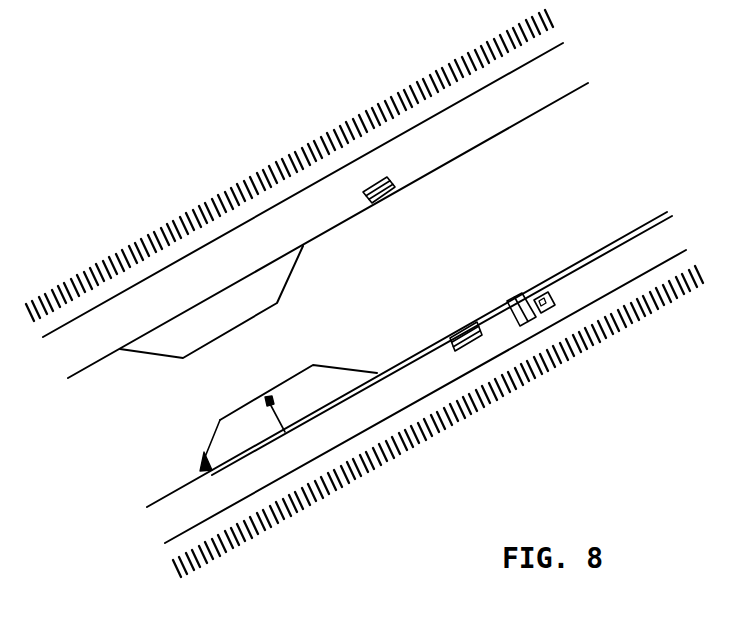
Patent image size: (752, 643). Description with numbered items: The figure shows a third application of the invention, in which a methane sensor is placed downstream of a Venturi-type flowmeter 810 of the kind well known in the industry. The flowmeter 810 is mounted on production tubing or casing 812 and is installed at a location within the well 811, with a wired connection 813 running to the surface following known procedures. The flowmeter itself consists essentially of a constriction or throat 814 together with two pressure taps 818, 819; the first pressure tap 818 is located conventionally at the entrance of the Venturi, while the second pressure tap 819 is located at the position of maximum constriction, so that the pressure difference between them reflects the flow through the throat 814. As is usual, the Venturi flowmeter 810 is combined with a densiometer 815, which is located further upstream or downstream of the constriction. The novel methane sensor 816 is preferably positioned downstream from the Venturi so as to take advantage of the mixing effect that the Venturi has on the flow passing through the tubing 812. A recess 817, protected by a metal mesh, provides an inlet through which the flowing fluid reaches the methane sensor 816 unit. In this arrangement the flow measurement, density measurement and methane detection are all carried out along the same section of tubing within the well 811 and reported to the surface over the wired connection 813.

The Venturi-type flowmeter 810 is at (141, 417).
The well 811 is at (585, 315).
The production tubing or casing 812 is at (523, 120).
The wired connection 813 is at (613, 250).
The constriction or throat 814 is at (255, 316).
The densiometer 815 is at (450, 328).
The methane sensor 816 is at (515, 325).
The recess 817 is at (510, 300).
The pressure tap 818 is at (267, 405).
The pressure tap 819 is at (204, 458).